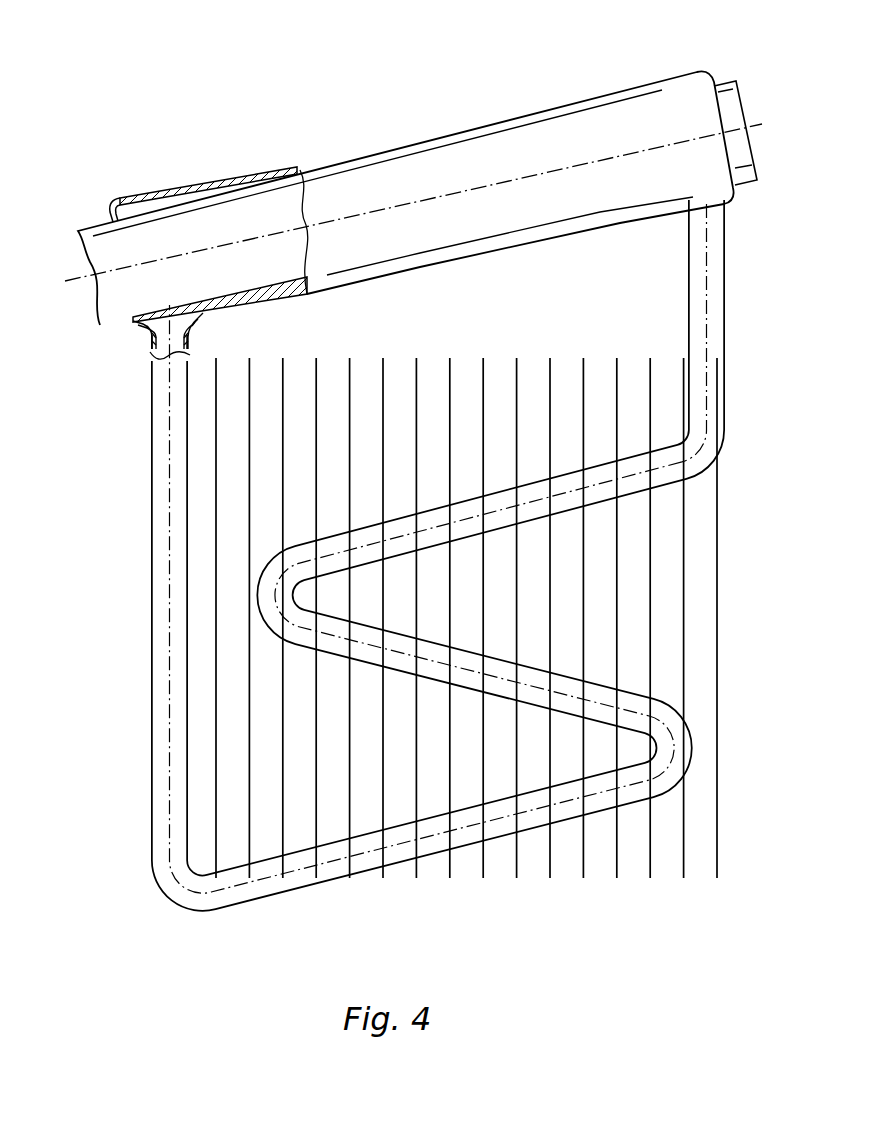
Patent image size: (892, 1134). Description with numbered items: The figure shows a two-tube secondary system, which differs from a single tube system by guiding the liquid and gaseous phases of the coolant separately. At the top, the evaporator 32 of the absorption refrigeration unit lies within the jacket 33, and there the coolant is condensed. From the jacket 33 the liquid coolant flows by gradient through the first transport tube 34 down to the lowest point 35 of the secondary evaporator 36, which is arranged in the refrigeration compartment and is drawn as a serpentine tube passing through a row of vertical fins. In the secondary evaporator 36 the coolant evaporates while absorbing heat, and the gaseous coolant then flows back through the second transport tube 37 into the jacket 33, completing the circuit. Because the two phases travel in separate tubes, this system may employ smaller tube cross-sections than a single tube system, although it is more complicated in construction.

The evaporator 32 is at (236, 212).
The jacket 33 is at (447, 127).
The first transport tube 34 is at (160, 348).
The lowest point 35 is at (210, 907).
The secondary evaporator 36 is at (465, 840).
The second transport tube 37 is at (718, 312).